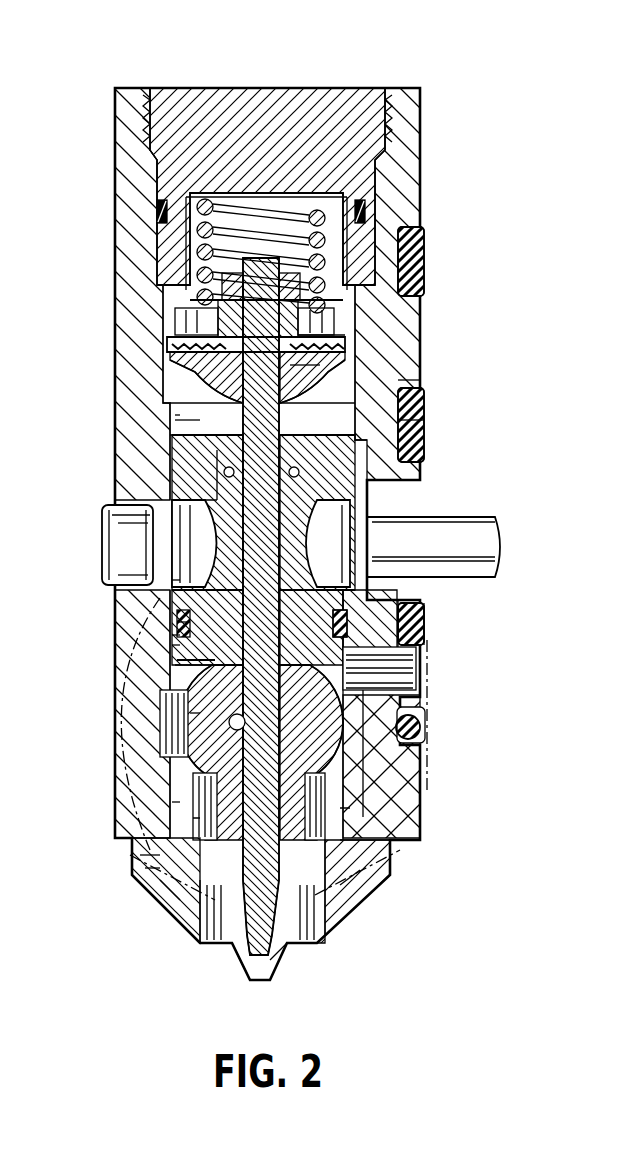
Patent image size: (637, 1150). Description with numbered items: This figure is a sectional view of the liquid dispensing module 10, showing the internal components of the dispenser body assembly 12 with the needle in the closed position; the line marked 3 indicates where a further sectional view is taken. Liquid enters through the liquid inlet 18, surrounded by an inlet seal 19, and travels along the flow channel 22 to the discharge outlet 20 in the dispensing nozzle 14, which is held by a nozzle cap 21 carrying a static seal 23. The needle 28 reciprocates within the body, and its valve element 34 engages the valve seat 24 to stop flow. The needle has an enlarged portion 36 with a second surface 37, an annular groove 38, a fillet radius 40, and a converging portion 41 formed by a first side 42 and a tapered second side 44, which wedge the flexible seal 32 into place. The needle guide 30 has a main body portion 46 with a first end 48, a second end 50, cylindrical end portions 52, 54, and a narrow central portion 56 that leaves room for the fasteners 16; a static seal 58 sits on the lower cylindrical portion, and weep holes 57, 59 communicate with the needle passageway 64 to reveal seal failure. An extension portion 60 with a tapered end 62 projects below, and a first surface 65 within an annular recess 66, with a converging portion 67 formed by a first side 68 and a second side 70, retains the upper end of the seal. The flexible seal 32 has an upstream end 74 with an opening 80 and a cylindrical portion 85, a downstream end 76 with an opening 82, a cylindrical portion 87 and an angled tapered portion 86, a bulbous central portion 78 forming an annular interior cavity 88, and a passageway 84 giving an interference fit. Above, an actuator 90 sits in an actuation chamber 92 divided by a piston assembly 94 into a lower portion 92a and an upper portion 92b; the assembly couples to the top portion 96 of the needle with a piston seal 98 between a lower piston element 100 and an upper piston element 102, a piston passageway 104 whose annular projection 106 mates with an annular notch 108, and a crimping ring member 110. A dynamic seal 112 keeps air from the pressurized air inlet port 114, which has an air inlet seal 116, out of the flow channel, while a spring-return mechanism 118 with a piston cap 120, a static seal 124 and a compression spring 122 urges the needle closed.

The section line 3- 3 is at (100, 720).
The liquid dispensing module 10 is at (87, 68).
The dispenser body assembly 12 is at (114, 253).
The dispensing nozzle 14 is at (338, 925).
The fasteners 16 is at (104, 545).
The liquid inlet 18 is at (402, 662).
The inlet seal 19 is at (450, 618).
The discharge outlet 20 is at (264, 983).
The nozzle cap 21 is at (396, 872).
The flow channel 22 is at (168, 768).
The static seal 23 is at (198, 818).
The valve seat 24 is at (292, 960).
The needle 28 is at (372, 520).
The needle guide 30 is at (112, 517).
The flexible seal 32 is at (140, 718).
The valve element 34 is at (253, 955).
The enlarged portion 36 is at (205, 940).
The second surface 37 is at (350, 893).
The annular groove 38 is at (202, 915).
The fillet radius 40 is at (310, 948).
The converging portion 41 is at (165, 888).
The first side 42 is at (395, 822).
The second side 44 is at (396, 849).
The main body portion 46 is at (380, 478).
The first end 48 is at (432, 632).
The second end 50 is at (426, 430).
The cylindrical end portion 52 is at (135, 580).
The cylindrical end portion 54 is at (180, 455).
The narrow central portion 56 is at (194, 543).
The weep hole 57 is at (133, 565).
The static seal 58 is at (165, 604).
The weep hole 59 is at (133, 532).
The extension portion 60 is at (178, 670).
The tapered end 62 is at (190, 713).
The needle passageway 64 is at (170, 688).
The first surface 65 is at (328, 543).
The annular recess 66 is at (433, 547).
The converging portion 67 is at (160, 632).
The first side 68 is at (348, 628).
The second side 70 is at (145, 658).
The upstream end 74 is at (430, 680).
The downstream end 76 is at (422, 762).
The central portion 78 is at (418, 720).
The opening 80 is at (178, 622).
The opening 82 is at (145, 862).
The passageway 84 is at (422, 735).
The cylindrical portion 85 is at (165, 645).
The angled tapered portion 86 is at (150, 870).
The cylindrical portion 87 is at (175, 802).
The annular interior cavity 88 is at (300, 722).
The actuator 90 is at (234, 383).
The actuation chamber 92 is at (214, 413).
The lower portion 92a is at (150, 393).
The upper portion 92b is at (160, 300).
The piston assembly 94 is at (165, 320).
The top portion 96 is at (268, 256).
The piston seal 98 is at (167, 343).
The lower piston element 100 is at (320, 365).
The upper piston element 102 is at (350, 312).
The piston passageway 104 is at (345, 325).
The annular projection 106 is at (172, 352).
The annular notch 108 is at (335, 345).
The crimping ring member 110 is at (426, 240).
The dynamic seal 112 is at (190, 478).
The pressurized air inlet port 114 is at (398, 388).
The air inlet seal 116 is at (426, 272).
The spring-return mechanism 118 is at (318, 205).
The piston cap 120 is at (330, 90).
The spring 122 is at (322, 277).
The static seal 124 is at (155, 213).